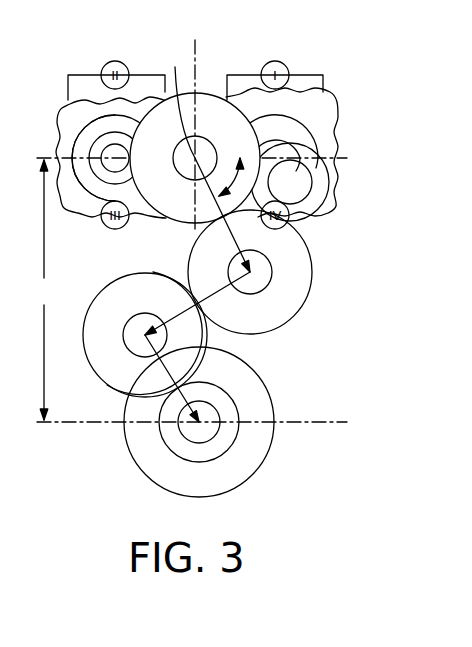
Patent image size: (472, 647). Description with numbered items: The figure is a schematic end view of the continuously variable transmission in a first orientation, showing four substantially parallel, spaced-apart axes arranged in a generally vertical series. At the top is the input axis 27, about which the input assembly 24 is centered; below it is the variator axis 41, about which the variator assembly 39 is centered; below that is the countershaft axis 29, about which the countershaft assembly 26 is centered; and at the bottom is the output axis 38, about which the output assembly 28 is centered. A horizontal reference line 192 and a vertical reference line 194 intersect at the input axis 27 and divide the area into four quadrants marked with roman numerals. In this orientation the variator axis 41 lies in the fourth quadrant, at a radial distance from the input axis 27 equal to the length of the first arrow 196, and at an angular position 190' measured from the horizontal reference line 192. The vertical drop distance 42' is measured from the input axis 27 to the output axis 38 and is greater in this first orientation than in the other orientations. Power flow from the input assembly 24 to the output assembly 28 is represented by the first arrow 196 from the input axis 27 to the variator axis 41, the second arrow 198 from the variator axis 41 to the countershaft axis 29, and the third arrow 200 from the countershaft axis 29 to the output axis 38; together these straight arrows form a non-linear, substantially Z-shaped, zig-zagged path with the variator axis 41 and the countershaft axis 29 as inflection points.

The input assembly 24 is at (221, 114).
The input axis 27 is at (197, 234).
The vertical reference line 194 is at (196, 63).
The horizontal reference line 192 is at (332, 146).
The angular position 190' is at (301, 182).
The first arrow 196 is at (226, 218).
The variator assembly 39 is at (293, 265).
The variator axis 41 is at (313, 293).
The vertical drop distance 42' is at (45, 290).
The countershaft assembly 26 is at (193, 337).
The second arrow 198 is at (153, 273).
The third arrow 200 is at (113, 383).
The countershaft axis 29 is at (192, 362).
The output assembly 28 is at (242, 463).
The output axis 38 is at (199, 421).